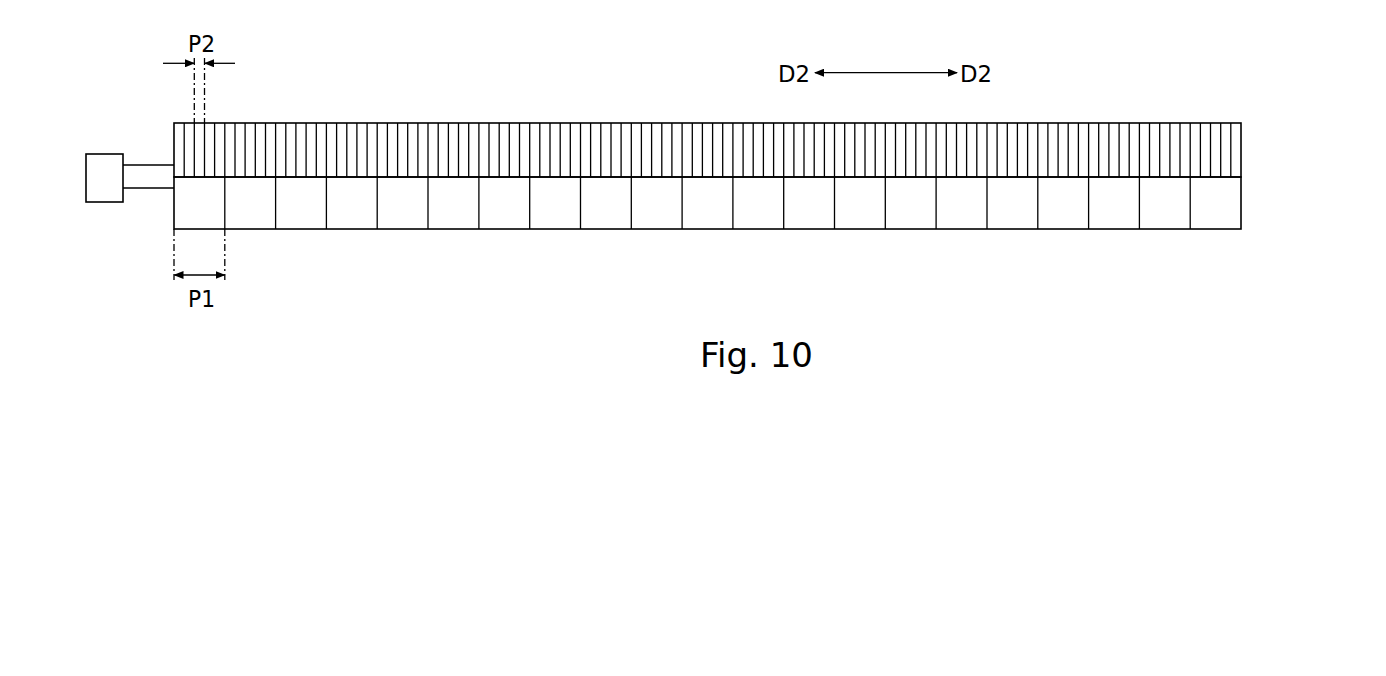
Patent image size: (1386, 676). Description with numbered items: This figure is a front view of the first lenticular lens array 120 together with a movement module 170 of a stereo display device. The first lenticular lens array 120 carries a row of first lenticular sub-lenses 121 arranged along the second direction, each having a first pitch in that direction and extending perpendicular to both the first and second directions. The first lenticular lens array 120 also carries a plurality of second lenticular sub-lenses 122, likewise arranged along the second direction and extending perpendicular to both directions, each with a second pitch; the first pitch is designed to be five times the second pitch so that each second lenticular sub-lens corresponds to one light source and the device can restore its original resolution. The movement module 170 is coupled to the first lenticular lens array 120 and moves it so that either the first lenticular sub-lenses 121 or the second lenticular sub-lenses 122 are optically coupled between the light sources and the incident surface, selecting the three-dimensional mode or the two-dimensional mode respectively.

The first lenticular lens array 120 is at (778, 176).
The first lenticular sub-lenses 121 is at (744, 202).
The second lenticular sub-lenses 122 is at (1235, 152).
The movement module 170 is at (102, 154).